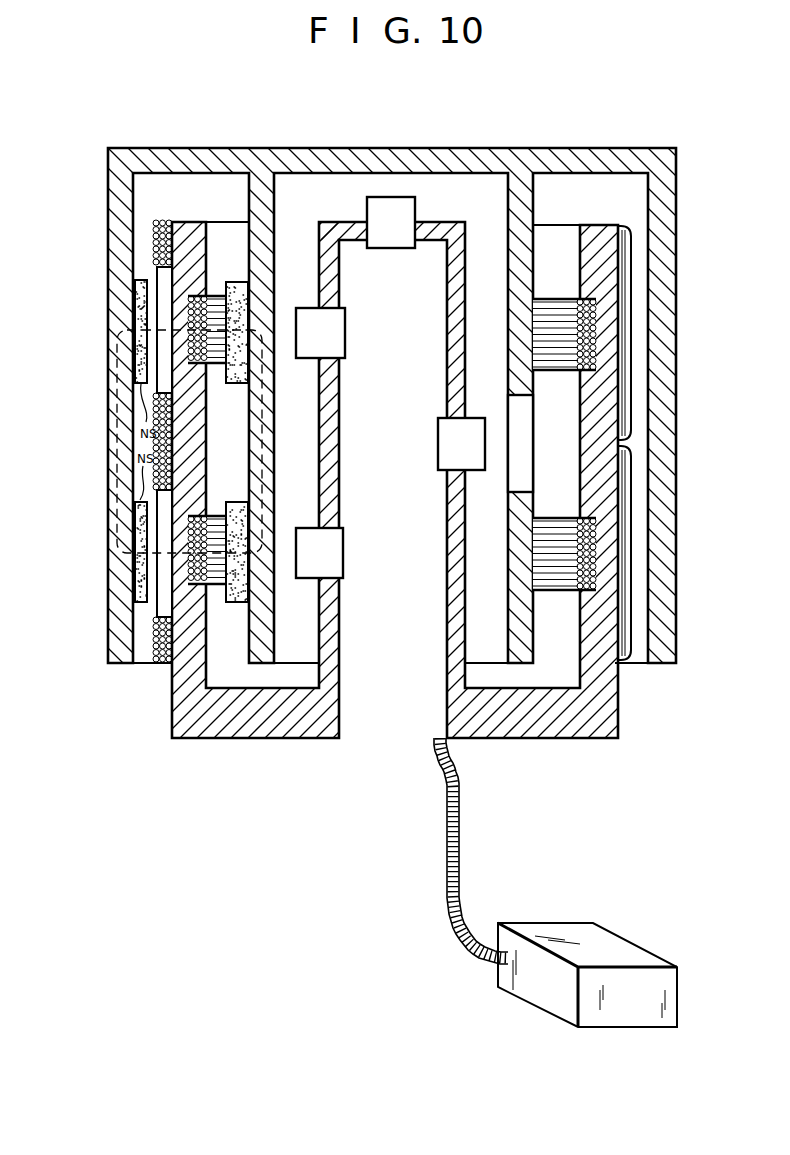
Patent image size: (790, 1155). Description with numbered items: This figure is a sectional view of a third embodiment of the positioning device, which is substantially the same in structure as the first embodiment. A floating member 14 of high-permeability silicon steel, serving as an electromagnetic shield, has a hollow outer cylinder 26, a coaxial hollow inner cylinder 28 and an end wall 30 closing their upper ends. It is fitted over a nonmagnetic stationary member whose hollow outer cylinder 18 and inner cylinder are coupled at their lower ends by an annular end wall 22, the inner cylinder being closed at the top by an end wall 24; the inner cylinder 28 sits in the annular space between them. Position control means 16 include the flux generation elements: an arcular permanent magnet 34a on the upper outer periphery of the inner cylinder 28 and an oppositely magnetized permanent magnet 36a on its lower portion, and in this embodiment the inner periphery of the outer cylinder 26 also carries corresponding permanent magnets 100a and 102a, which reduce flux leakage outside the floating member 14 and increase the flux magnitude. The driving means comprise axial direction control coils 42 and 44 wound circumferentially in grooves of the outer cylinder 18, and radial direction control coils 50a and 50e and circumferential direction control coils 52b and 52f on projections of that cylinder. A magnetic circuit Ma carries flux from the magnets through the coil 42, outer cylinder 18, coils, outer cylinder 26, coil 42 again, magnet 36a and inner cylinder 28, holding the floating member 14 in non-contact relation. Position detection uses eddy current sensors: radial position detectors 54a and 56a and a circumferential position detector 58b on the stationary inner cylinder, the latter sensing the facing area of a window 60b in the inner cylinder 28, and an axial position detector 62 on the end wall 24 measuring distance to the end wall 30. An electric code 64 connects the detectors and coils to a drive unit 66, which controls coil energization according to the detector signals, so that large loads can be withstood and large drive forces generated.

The floating member 14 is at (533, 160).
The position control means 16 is at (213, 230).
The hollow outer cylinder 18 is at (600, 237).
The annular end wall 22 is at (533, 740).
The end wall 24 is at (450, 228).
The hollow outer cylinder 26 is at (672, 298).
The hollow inner cylinder 28 is at (513, 293).
The end wall 30 is at (297, 156).
The permanent magnet 34a is at (240, 283).
The permanent magnet 36a is at (236, 604).
The axial direction control coil 42 is at (216, 366).
The axial direction control coil 44 is at (215, 520).
The radial direction control coil 50a is at (153, 235).
The radial direction control coil 50e is at (160, 663).
The circumferential direction control coil 52b is at (630, 352).
The circumferential direction control coil 52f is at (630, 580).
The radial position detector 54a is at (345, 322).
The radial position detector 56a is at (343, 565).
The circumferential position detector 58b is at (440, 450).
The window 60b is at (528, 444).
The axial position detector 62 is at (395, 242).
The electric code 64 is at (447, 838).
The drive unit 66 is at (625, 946).
The permanent magnet 100a is at (135, 290).
The permanent magnet 102a is at (133, 590).
The magnetic circuit Ma is at (117, 358).